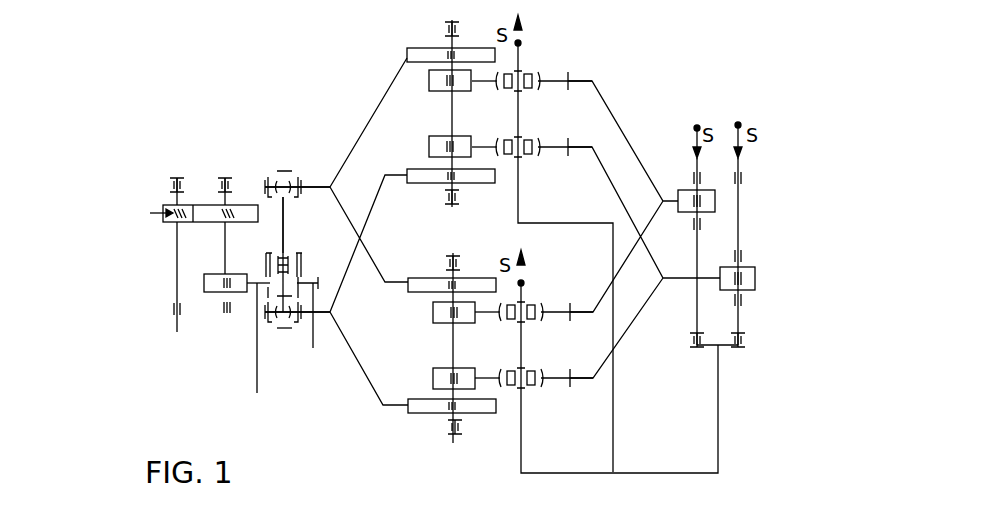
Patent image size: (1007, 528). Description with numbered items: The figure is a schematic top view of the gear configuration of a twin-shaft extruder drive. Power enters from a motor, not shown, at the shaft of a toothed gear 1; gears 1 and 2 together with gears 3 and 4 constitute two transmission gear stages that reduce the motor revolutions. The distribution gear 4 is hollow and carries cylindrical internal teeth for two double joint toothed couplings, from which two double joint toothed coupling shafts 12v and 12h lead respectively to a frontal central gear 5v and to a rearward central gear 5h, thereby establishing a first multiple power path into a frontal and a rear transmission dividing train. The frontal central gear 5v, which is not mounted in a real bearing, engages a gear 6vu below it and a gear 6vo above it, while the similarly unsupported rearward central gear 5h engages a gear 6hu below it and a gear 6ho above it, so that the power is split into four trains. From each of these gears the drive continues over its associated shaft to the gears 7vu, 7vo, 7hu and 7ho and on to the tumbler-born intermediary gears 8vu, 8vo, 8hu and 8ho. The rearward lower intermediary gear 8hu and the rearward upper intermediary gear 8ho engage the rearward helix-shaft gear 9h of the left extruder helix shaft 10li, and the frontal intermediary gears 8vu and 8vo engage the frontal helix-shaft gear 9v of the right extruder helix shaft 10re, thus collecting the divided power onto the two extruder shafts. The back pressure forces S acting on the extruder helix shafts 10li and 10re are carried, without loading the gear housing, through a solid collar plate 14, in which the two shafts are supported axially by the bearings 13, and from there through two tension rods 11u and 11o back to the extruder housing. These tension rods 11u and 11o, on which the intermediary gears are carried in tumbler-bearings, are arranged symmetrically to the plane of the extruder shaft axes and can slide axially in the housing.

The toothed gear 1 is at (156, 213).
The gear 2 is at (207, 205).
The gear 3 is at (210, 292).
The distribution gear 4 is at (257, 290).
The rearward central gear 5h is at (300, 180).
The frontal central gear 5v is at (302, 322).
The double joint toothed coupling shaft 12h is at (283, 197).
The double joint toothed coupling shaft 12v is at (313, 348).
The rearward upper gear 6ho is at (407, 58).
The frontal upper gear 6vo is at (422, 183).
The rearward lower gear 6hu is at (423, 278).
The frontal lower gear 6vu is at (422, 413).
The rearward upper gear 7ho is at (429, 81).
The frontal upper gear 7vo is at (429, 147).
The rearward lower gear 7hu is at (433, 312).
The frontal lower gear 7vu is at (433, 378).
The rearward upper intermediary gear 8ho is at (557, 76).
The frontal upper intermediary gear 8vo is at (554, 150).
The rearward lower intermediary gear 8hu is at (555, 308).
The frontal lower intermediary gear 8vu is at (553, 386).
The tension rod 11o is at (520, 58).
The tension rod 11u is at (521, 462).
The left extruder helix shaft 10li is at (697, 167).
The right extruder helix shaft 10re is at (738, 167).
The rearward helix-shaft gear 9h is at (715, 201).
The frontal helix-shaft gear 9v is at (755, 278).
The bearings 13 is at (745, 345).
The solid collar plate 14 is at (720, 383).